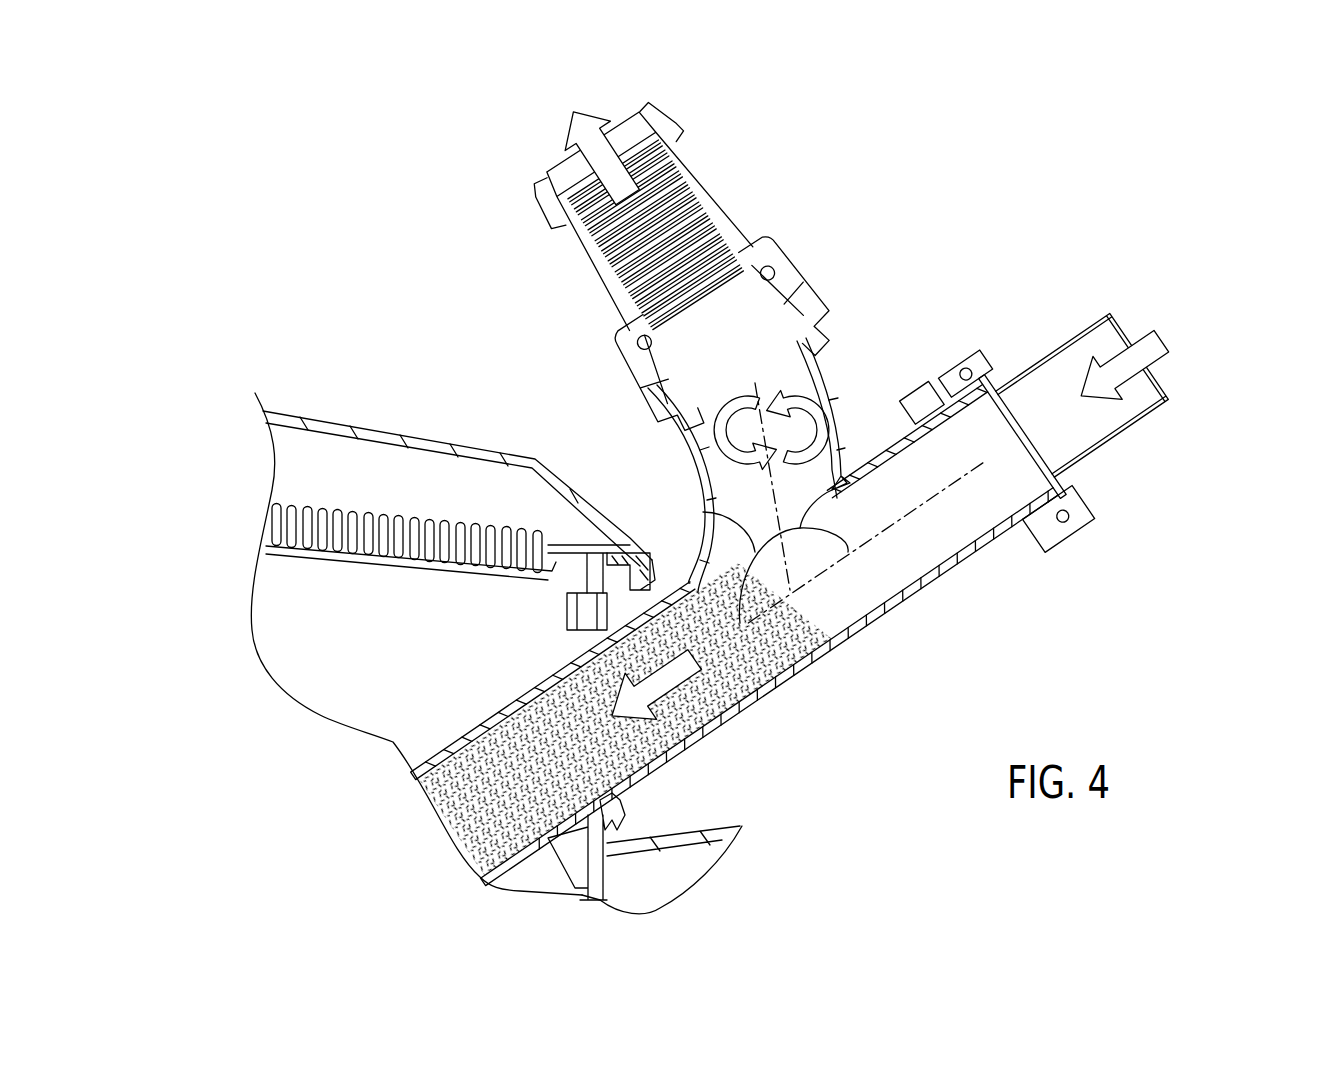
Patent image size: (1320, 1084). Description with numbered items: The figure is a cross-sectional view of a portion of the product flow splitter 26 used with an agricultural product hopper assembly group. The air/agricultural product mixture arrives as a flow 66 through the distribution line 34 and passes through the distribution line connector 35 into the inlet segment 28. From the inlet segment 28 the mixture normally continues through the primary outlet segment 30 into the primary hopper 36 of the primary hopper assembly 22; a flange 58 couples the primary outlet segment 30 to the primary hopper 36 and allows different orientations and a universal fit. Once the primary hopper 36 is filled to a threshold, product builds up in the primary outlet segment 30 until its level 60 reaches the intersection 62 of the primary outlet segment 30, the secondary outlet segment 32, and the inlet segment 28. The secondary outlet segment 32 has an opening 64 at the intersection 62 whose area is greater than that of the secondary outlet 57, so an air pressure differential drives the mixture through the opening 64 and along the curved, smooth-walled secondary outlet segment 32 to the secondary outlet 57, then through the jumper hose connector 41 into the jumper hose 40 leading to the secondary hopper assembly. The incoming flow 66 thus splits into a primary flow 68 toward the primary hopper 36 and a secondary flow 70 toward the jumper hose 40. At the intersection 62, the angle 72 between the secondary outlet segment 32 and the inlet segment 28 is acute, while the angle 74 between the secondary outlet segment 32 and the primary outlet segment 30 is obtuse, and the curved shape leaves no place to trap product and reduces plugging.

The primary hopper assembly 22 is at (207, 206).
The product flow splitter 26 is at (1043, 408).
The inlet segment 28 is at (927, 457).
The primary outlet segment 30 is at (734, 646).
The secondary outlet segment 32 is at (722, 473).
The distribution line 34 is at (1137, 358).
The distribution line connector 35 is at (1128, 337).
The primary hopper 36 is at (496, 653).
The jumper hose 40 is at (663, 350).
The jumper hose connector 41 is at (687, 192).
The secondary outlet 57 is at (703, 337).
The flange 58 is at (617, 600).
The level 60 is at (810, 617).
The intersection 62 is at (933, 593).
The opening 64 is at (757, 508).
The flow 66 is at (1123, 367).
The primary flow 68 is at (647, 697).
The secondary flow 70 is at (598, 153).
The angle 72 is at (810, 487).
The angle 74 is at (757, 513).